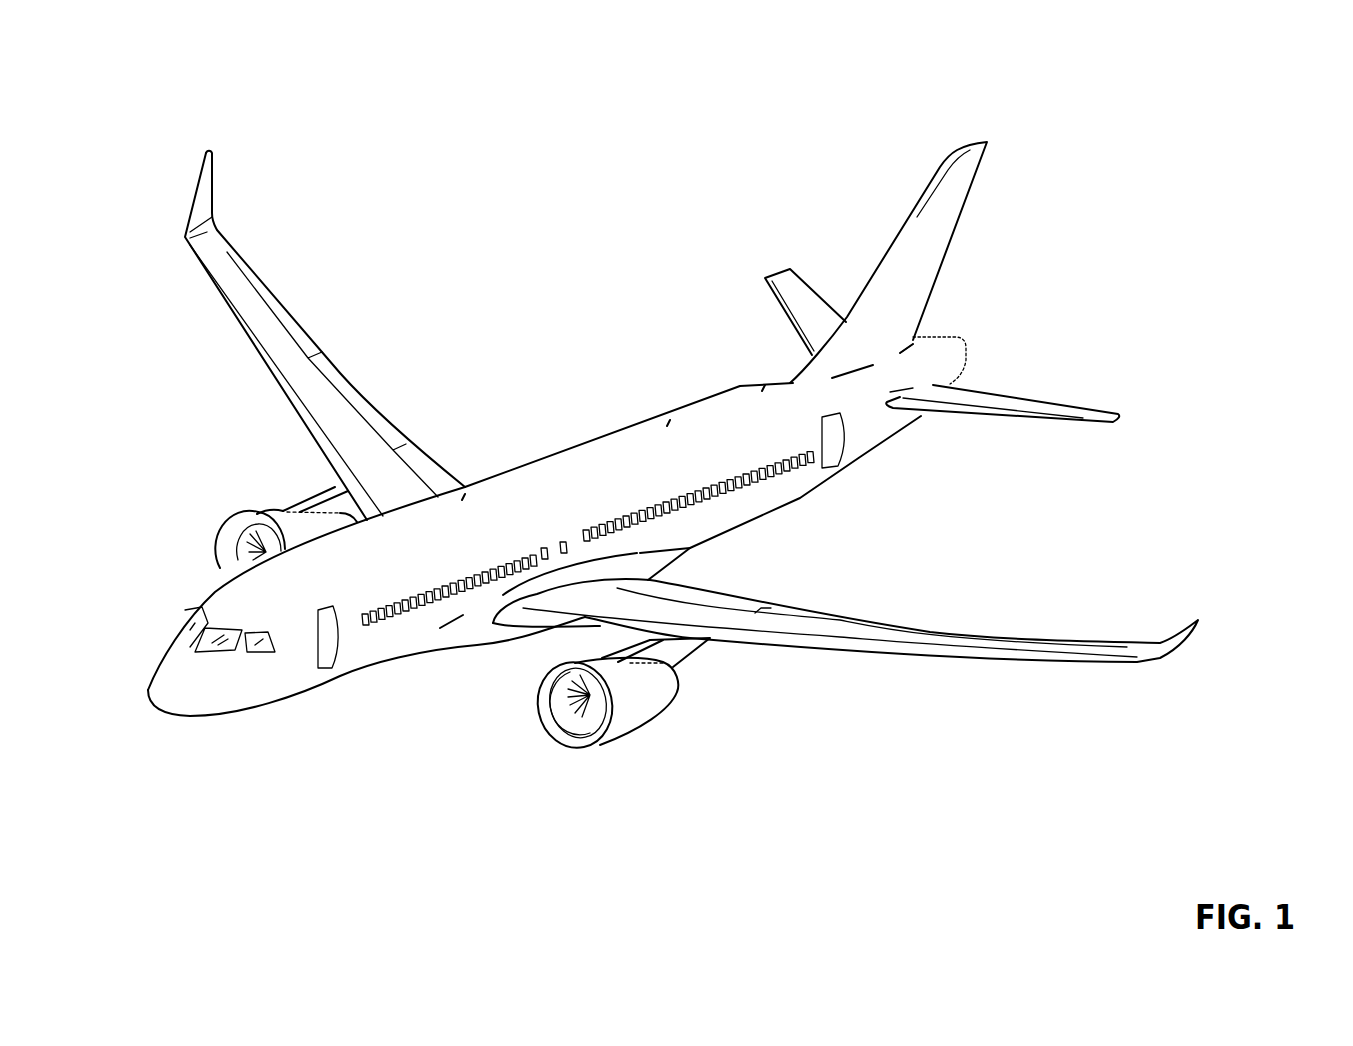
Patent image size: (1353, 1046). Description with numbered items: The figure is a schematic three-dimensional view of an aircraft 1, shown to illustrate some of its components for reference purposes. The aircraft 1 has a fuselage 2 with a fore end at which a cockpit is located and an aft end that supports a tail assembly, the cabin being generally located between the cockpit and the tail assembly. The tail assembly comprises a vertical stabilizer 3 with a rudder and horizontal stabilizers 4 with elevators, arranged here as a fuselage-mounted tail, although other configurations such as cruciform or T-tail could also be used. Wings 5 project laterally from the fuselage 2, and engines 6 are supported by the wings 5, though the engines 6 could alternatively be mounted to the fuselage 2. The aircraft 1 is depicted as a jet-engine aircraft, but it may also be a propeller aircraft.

The aircraft 1 is at (196, 114).
The fuselage 2 is at (387, 650).
The vertical stabilizer 3 is at (933, 209).
The horizontal stabilizers 4 is at (803, 312).
The wings 5 is at (350, 430).
The engines 6 is at (281, 520).